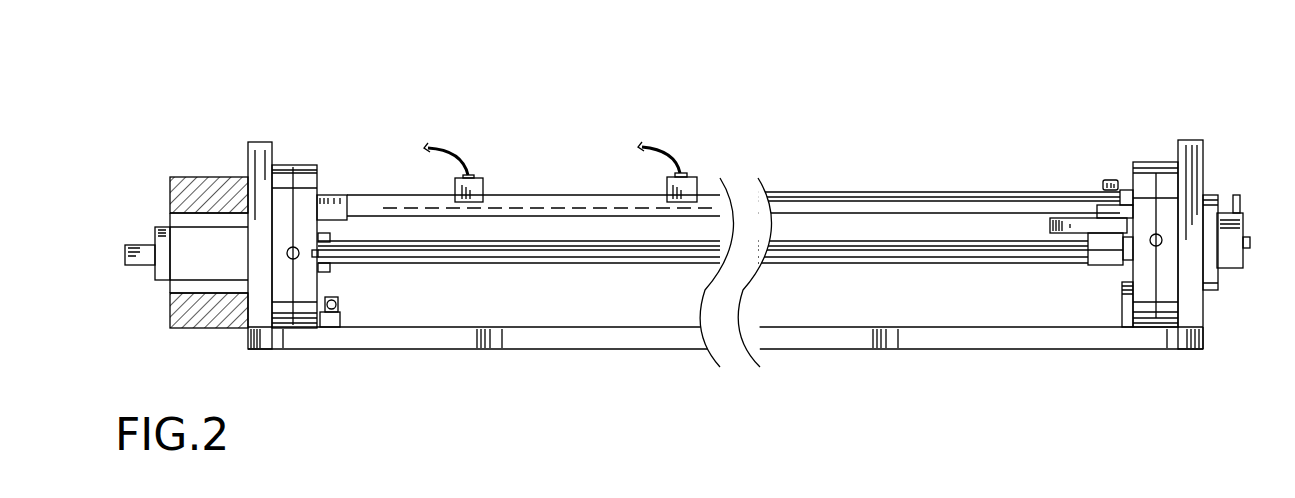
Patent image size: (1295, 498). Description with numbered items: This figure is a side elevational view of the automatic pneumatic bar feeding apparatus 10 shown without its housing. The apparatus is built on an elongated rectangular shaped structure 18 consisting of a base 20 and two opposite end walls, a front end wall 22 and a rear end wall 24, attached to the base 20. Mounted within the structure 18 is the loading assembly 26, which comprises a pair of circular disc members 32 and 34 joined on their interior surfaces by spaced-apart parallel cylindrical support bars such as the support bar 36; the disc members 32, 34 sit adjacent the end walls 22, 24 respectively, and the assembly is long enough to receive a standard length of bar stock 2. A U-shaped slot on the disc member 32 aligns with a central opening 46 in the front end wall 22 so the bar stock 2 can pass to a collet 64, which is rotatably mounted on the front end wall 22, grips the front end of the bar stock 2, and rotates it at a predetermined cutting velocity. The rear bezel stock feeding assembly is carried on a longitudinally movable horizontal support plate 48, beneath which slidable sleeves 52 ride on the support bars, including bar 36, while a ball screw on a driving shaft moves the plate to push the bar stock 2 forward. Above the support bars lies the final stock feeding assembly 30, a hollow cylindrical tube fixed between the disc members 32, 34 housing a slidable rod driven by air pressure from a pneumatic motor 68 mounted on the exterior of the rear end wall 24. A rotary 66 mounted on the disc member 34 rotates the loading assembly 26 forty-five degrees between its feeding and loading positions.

The bar stock 2 is at (138, 243).
The bar feeding apparatus 10 is at (1100, 74).
The elongated rectangular shaped structure 18 is at (1206, 350).
The base 20 is at (970, 337).
The front end wall 22 is at (247, 162).
The rear end wall 24 is at (1204, 163).
The loading assembly 26 is at (798, 171).
The final stock feeding assembly 30 is at (527, 192).
The circular disc member 32 is at (318, 289).
The circular disc member 34 is at (1130, 170).
The cylindrical support bar 36 is at (500, 258).
The central opening 46 is at (213, 330).
The horizontal support plate 48 is at (1062, 222).
The slidable sleeves 52 is at (1102, 263).
The collet 64 is at (158, 314).
The rotary 66 is at (1120, 303).
The pneumatic motor 68 is at (1233, 268).